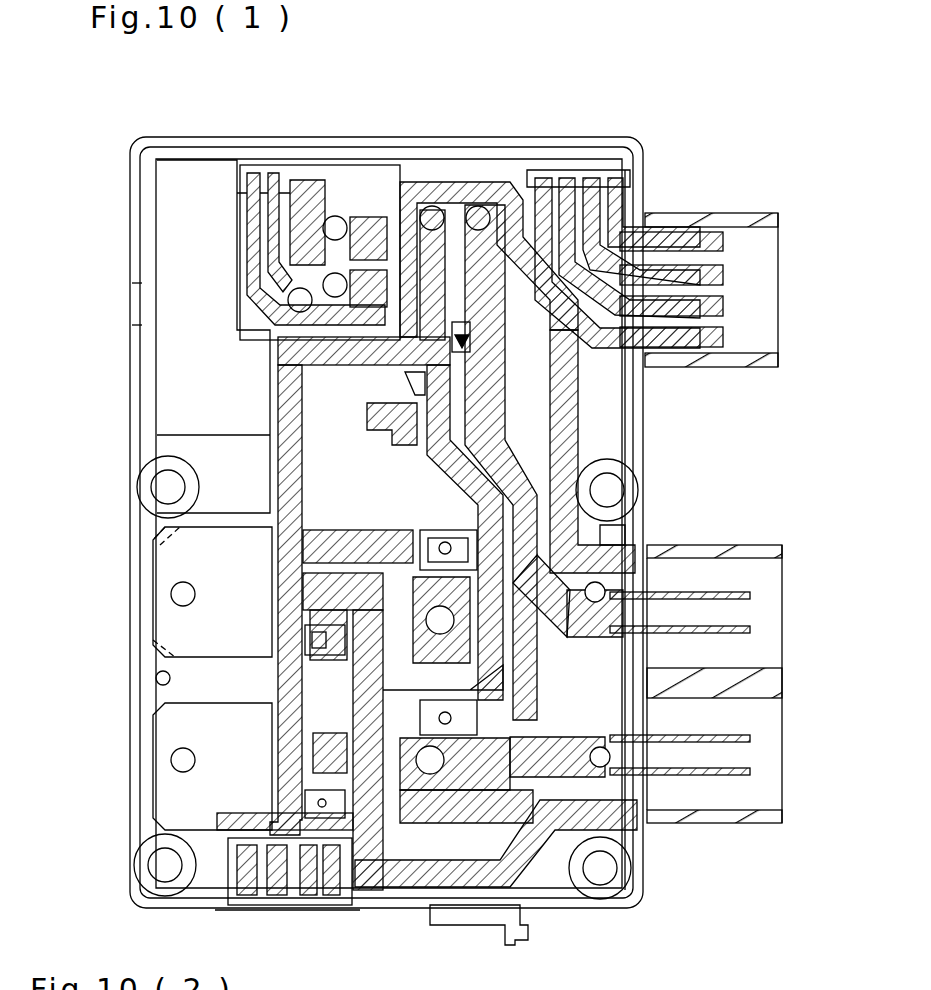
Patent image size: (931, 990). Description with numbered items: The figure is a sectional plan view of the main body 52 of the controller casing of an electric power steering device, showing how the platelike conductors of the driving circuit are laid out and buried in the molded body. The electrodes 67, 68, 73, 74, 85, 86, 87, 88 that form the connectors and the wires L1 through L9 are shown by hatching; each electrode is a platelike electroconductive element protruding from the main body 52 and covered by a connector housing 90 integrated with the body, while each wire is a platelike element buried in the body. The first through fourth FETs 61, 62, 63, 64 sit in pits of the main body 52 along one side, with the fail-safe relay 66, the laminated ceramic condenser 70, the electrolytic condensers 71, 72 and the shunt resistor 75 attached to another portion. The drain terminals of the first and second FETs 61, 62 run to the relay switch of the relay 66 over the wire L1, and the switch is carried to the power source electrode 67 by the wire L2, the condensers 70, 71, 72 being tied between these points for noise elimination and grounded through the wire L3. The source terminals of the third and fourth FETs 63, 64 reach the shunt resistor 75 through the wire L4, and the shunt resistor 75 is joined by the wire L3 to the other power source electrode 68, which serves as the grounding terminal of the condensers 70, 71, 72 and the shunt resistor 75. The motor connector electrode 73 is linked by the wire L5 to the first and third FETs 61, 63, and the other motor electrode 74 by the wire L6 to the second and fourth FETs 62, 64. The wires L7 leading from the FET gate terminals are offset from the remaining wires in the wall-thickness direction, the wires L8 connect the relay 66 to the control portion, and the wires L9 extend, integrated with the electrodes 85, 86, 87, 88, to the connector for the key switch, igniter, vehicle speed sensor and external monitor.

The main body 52 is at (365, 147).
The electrolytic condenser 72 is at (410, 185).
The fail-safe relay 66 is at (278, 342).
The electrolytic condenser 71 is at (499, 340).
The laminated ceramic condenser 70 is at (410, 382).
The shunt resistor 75 is at (375, 405).
The third FET 63 is at (612, 533).
The fourth FET 64 is at (170, 585).
The second FET 62 is at (170, 778).
The first FET 61 is at (700, 680).
The electrode 67 is at (750, 596).
The electrode 68 is at (750, 630).
The electrode 73 is at (750, 739).
The electrode 74 is at (750, 772).
The electrode 85 is at (723, 337).
The electrode 86 is at (723, 305).
The electrode 87 is at (723, 275).
The electrode 88 is at (723, 242).
The connector housing 90 is at (740, 367).
The wire L1 is at (278, 400).
The wire L2 is at (578, 420).
The wire L3 is at (505, 400).
The wire L4 is at (393, 503).
The wire L5 is at (565, 738).
The wire L6 is at (520, 890).
The wires L7 is at (333, 895).
The wires L8 is at (350, 225).
The wires L9 is at (614, 177).